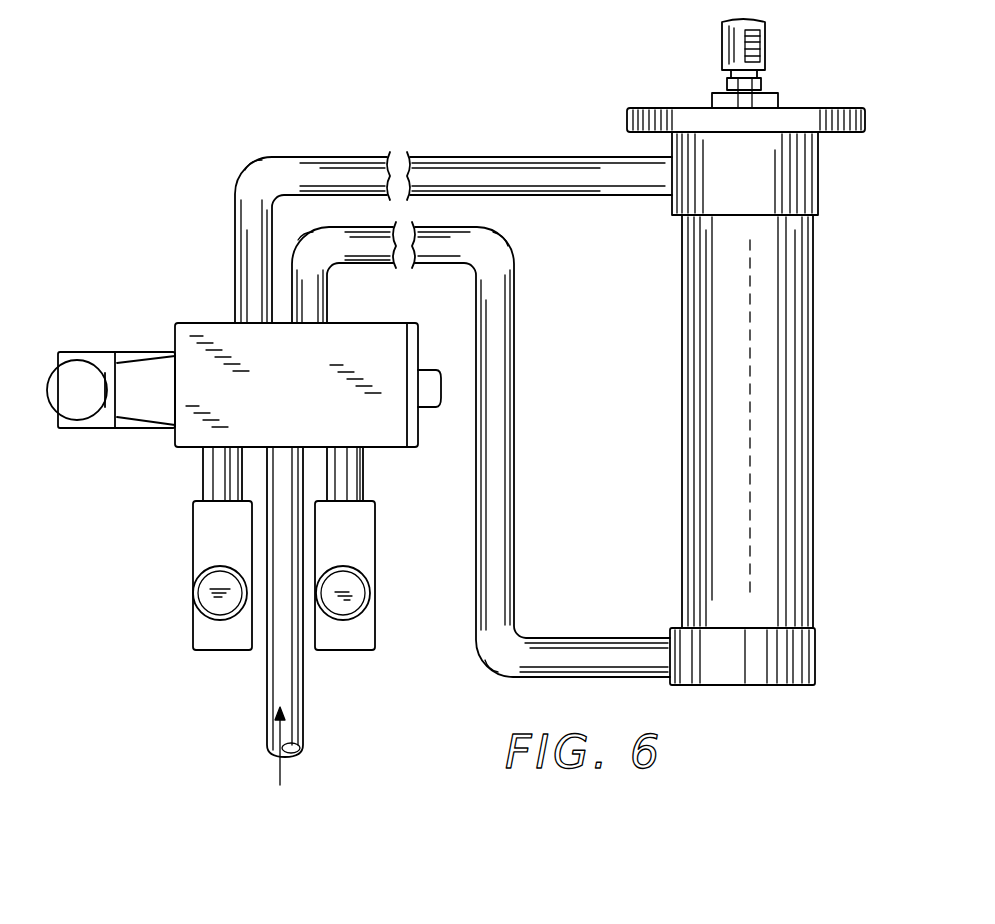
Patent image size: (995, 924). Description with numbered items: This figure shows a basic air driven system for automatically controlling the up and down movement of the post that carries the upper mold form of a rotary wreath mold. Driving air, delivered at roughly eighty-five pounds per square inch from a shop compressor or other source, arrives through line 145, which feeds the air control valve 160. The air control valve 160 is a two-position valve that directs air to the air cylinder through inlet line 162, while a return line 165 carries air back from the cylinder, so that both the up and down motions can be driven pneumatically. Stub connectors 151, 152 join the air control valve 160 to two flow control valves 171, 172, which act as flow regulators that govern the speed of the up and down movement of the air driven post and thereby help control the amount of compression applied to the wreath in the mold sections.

The line 145 is at (285, 680).
The stub connector 151 is at (217, 468).
The stub connector 152 is at (347, 477).
The air control valve 160 is at (185, 437).
The line 162 is at (518, 176).
The return line 165 is at (497, 352).
The flow control valve 171 is at (205, 550).
The flow control valve 172 is at (363, 552).